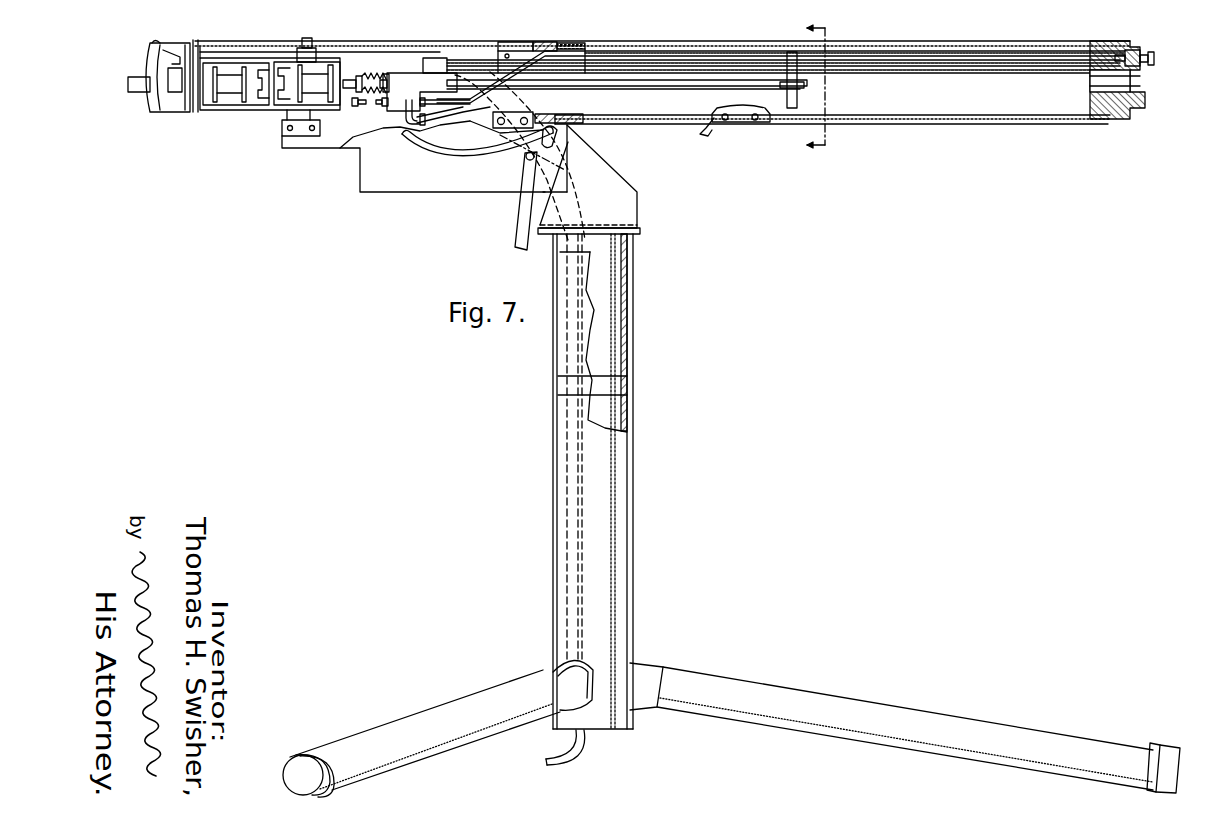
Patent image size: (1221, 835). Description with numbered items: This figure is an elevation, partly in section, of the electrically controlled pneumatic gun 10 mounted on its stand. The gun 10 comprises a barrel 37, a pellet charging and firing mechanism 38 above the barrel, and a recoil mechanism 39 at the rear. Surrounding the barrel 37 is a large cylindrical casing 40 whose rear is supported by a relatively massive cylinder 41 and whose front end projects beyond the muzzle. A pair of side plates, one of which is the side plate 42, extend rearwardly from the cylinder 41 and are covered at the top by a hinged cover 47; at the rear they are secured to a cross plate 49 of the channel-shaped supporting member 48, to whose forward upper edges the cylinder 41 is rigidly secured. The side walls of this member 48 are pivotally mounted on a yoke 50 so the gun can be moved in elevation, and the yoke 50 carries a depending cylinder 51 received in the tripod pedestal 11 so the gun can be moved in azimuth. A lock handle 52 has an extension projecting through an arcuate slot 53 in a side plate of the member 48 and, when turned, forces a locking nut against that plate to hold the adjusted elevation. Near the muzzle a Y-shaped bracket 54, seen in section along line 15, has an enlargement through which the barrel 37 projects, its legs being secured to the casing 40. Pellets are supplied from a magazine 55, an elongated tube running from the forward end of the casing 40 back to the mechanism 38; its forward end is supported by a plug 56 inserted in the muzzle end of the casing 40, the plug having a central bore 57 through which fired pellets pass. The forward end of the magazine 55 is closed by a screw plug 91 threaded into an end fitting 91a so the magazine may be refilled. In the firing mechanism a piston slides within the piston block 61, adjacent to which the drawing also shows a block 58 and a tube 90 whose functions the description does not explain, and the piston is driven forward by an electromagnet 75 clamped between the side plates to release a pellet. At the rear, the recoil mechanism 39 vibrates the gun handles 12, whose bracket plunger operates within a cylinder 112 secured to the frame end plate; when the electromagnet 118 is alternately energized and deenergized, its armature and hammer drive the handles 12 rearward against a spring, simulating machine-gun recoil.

The pneumatic gun 10 is at (905, 124).
The tripod pedestal 11 is at (634, 478).
The gun handles 12 is at (150, 96).
The cylinder 112 is at (135, 77).
The section line 15- 15 is at (828, 86).
The barrel 37 is at (617, 80).
The pellet charging and firing mechanism 38 is at (370, 75).
The recoil mechanism 39 is at (228, 104).
The cylindrical casing 40 is at (648, 124).
The relatively massive cylinder 41 is at (538, 43).
The side plate 42 is at (256, 110).
The hinged cover 47 is at (236, 52).
The member 48 is at (412, 192).
The cross plate 49 is at (280, 122).
The yoke 50 is at (625, 180).
The depending cylinder 51 is at (617, 330).
The handle 52 is at (515, 236).
The arcuate slot 53 is at (448, 170).
The Y-shaped bracket 54 is at (784, 95).
The magazine 55 is at (975, 66).
The plug 56 is at (1118, 119).
The central bore 57 is at (1142, 82).
The block 58 is at (440, 58).
The piston block 61 is at (410, 73).
The electromagnet 75 is at (315, 70).
The air tube 90 is at (458, 111).
The screw plug 91 is at (1155, 60).
The end fitting 91a is at (1133, 50).
The electromagnet 118 is at (230, 72).